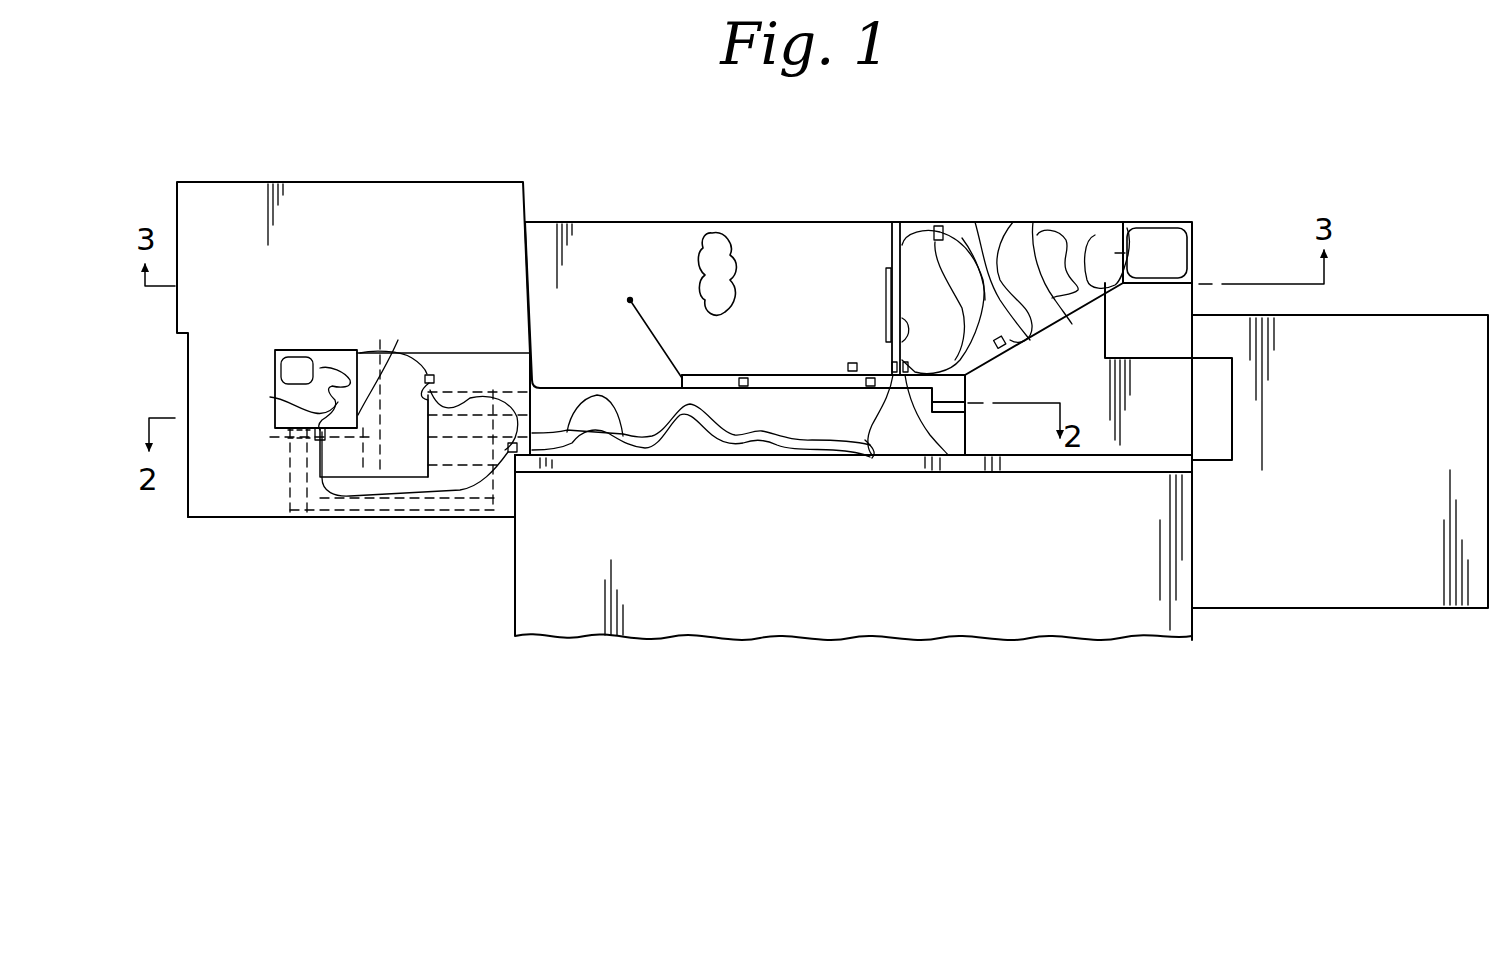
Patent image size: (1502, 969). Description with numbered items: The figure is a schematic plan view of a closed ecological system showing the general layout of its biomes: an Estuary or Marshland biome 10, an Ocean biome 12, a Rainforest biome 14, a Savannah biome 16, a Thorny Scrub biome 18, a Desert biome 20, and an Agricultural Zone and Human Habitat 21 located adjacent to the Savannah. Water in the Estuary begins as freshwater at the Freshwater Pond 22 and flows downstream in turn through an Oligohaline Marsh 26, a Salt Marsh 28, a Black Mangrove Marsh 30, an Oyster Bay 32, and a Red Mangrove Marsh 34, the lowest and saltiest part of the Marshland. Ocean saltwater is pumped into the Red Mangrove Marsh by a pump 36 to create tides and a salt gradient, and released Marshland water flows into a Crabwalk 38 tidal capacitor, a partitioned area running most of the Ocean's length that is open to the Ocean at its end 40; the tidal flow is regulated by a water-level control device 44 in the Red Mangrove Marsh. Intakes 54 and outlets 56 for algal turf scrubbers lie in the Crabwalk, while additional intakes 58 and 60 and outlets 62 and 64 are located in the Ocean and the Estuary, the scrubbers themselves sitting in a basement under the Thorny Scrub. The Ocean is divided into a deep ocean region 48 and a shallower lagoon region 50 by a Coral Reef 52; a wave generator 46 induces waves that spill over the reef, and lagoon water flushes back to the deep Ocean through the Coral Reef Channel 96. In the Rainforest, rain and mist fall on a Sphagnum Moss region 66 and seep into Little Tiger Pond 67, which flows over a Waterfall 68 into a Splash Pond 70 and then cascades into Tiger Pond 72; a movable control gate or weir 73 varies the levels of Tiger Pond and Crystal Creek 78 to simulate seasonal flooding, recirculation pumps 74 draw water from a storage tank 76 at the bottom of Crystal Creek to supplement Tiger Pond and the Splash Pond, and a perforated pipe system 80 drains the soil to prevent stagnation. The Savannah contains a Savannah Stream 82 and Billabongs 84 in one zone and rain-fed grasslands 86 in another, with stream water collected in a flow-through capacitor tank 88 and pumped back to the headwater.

The Estuary or Marshland biome 10 is at (1082, 215).
The Ocean biome 12 is at (733, 218).
The Rainforest biome 14 is at (405, 522).
The Savannah biome 16 is at (737, 460).
The Thorny Scrub biome 18 is at (1118, 437).
The Desert biome 20 is at (1280, 609).
The Agricultural Zone and Human Habitat 21 is at (828, 604).
The Freshwater Pond 22 is at (1168, 251).
The Oligohaline Marsh 26 is at (1115, 227).
The Salt Marsh 28 is at (1040, 228).
The Black Mangrove Marsh 30 is at (1013, 232).
The Oyster Bay 32 is at (962, 240).
The Red Mangrove Marsh 34 is at (912, 232).
The pump 36 is at (906, 416).
The Crabwalk tidal capacitor 38 is at (763, 392).
The Crabwalk end 40 is at (682, 385).
The water-level control device 44 is at (950, 457).
The wave generator 46 is at (886, 295).
The deep ocean region 48 is at (793, 243).
The lagoon region 50 is at (542, 243).
The Coral Reef 52 is at (703, 237).
The intakes 54 is at (870, 378).
The outlets 56 is at (750, 382).
The intake 58 is at (630, 300).
The intake 60 is at (942, 232).
The outlet 62 is at (848, 367).
The outlet 64 is at (1001, 347).
The Sphagnum Moss region 66 is at (295, 370).
The Little Tiger Pond 67 is at (290, 402).
The Waterfall 68 is at (386, 377).
The Splash Pond 70 is at (367, 362).
The Tiger Pond 72 is at (400, 450).
The control gate or weir 73 is at (429, 375).
The recirculation pumps 74 is at (315, 435).
The storage tank 76 is at (511, 453).
The Crystal Creek 78 is at (460, 455).
The perforated pipe system 80 is at (290, 540).
The Savannah Stream 82 is at (620, 437).
The Billabongs 84 is at (593, 413).
The rain-fed grasslands 86 is at (694, 437).
The flow-through capacitor tank 88 is at (860, 400).
The Coral Reef Channel 96 is at (682, 407).